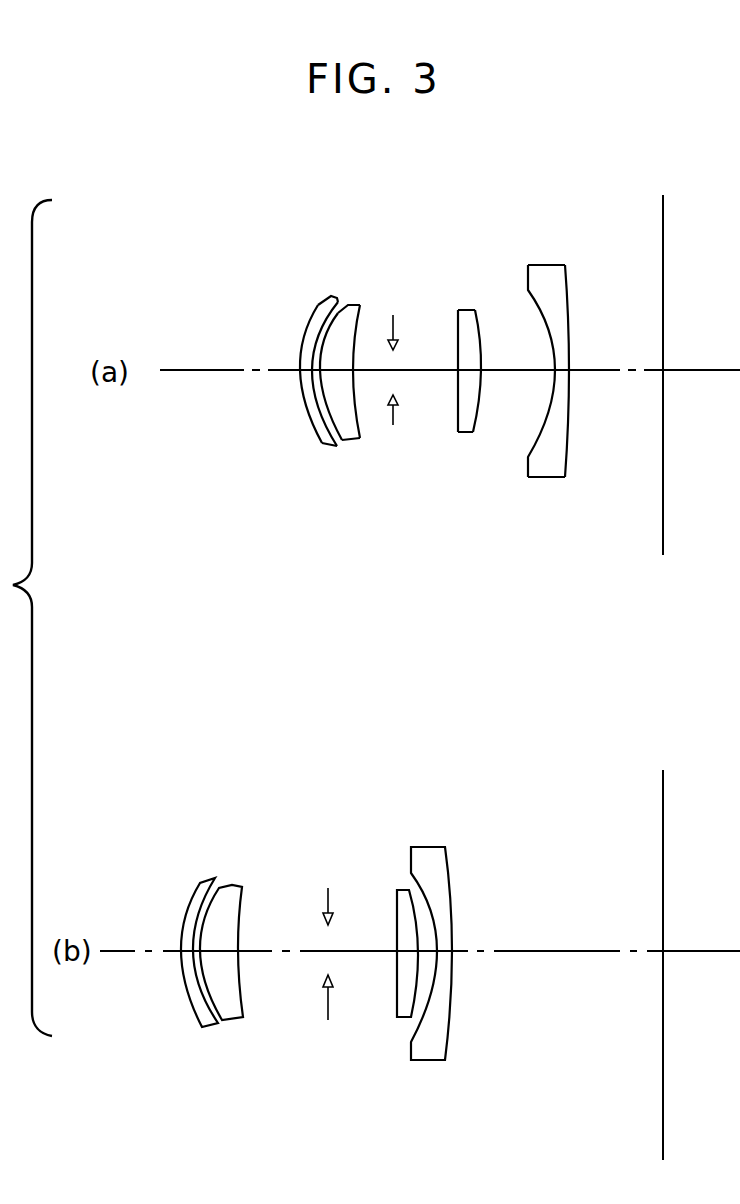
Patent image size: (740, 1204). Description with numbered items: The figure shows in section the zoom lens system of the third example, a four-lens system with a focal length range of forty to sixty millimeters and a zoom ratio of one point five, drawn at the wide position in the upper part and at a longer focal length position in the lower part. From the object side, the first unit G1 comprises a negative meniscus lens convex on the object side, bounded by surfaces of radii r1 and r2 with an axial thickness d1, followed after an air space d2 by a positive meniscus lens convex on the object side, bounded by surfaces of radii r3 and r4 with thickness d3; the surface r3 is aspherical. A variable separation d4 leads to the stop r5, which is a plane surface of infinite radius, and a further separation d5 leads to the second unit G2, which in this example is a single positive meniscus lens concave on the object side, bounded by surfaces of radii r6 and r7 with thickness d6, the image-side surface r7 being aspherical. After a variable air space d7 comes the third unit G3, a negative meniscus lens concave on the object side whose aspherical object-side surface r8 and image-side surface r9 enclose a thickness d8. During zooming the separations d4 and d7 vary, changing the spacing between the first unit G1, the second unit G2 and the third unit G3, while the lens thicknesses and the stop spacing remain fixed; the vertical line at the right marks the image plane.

The first unit G1 is at (368, 242).
The second unit G2 is at (472, 242).
The third unit G3 is at (575, 242).
The radius of curvature of the first lens surface r1 is at (309, 318).
The radius of curvature of the second lens surface r2 is at (316, 316).
The radius of curvature of the third lens surface r3 is at (340, 314).
The radius of curvature of the fourth lens surface r4 is at (361, 324).
The stop surface r5 is at (395, 358).
The radius of curvature of the sixth lens surface r6 is at (458, 333).
The radius of curvature of the seventh lens surface r7 is at (480, 333).
The radius of curvature of the eighth lens surface r8 is at (543, 312).
The radius of curvature of the ninth lens surface r9 is at (570, 307).
The separation between the first and second lens surfaces d1 is at (307, 380).
The separation between the second and third lens surfaces d2 is at (318, 393).
The separation between the third and fourth lens surfaces d3 is at (336, 386).
The separation between the fourth surface and the stop d4 is at (373, 386).
The separation between the stop and the sixth lens surface d5 is at (425, 386).
The separation between the sixth and seventh lens surfaces d6 is at (470, 373).
The separation between the seventh and eighth lens surfaces d7 is at (518, 387).
The separation between the eighth and ninth lens surfaces d8 is at (565, 375).